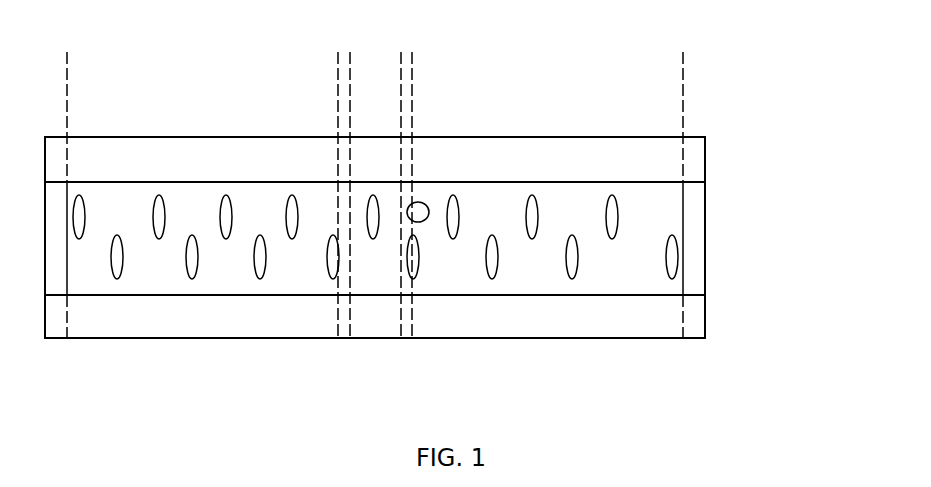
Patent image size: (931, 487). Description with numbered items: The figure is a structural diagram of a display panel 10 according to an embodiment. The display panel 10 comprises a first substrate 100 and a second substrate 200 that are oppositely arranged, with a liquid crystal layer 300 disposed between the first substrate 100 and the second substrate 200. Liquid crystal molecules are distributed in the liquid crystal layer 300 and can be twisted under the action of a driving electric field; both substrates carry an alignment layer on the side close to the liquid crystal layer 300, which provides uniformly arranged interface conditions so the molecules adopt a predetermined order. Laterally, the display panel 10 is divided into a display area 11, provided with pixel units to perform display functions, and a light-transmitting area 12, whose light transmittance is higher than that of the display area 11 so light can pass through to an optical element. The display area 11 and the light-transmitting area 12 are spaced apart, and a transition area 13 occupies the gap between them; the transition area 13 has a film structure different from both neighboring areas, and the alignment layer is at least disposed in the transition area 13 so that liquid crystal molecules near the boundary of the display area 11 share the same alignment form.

The display panel 10 is at (797, 181).
The first substrate 100 is at (706, 162).
The second substrate 200 is at (706, 312).
The liquid crystal layer 300 is at (668, 247).
The display area 11 is at (534, 52).
The light-transmitting area 12 is at (376, 52).
The transition area 13 is at (407, 52).